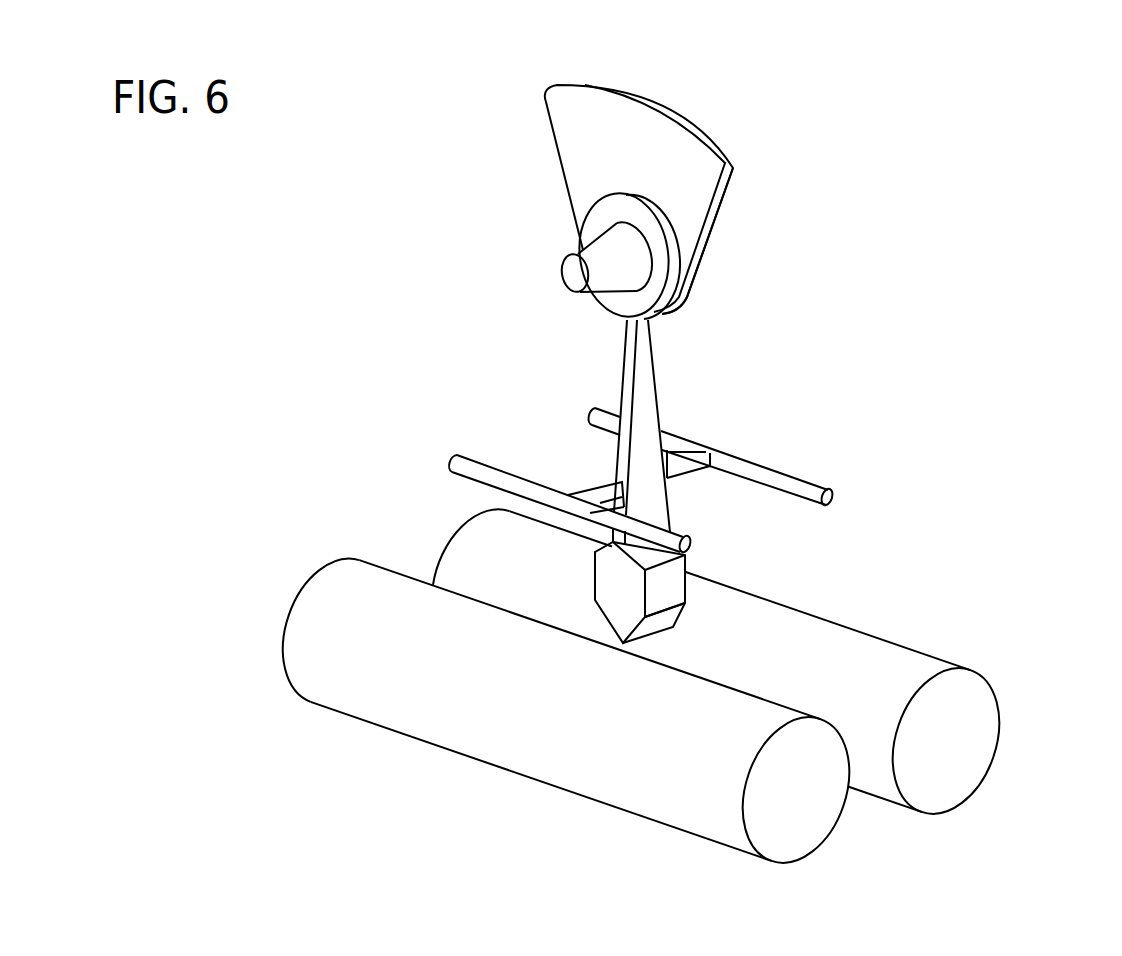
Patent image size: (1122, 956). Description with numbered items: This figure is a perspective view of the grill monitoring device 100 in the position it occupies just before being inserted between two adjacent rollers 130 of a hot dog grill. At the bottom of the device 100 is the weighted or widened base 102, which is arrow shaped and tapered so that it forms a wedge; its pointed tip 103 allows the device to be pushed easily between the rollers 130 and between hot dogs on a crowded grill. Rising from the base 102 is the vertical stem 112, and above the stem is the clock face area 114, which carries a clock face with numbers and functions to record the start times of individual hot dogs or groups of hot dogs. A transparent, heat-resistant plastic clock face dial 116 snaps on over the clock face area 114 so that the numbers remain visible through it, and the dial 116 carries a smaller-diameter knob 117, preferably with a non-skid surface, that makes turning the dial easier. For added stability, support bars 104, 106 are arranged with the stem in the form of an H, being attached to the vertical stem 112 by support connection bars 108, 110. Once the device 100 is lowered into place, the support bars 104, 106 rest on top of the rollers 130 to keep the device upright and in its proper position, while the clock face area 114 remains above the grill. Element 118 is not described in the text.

The monitoring device 100 is at (428, 105).
The base 102 is at (665, 588).
The pointed tip 103 is at (690, 653).
The support bar 104 is at (802, 488).
The support bar 106 is at (473, 472).
The support connection bar 108 is at (690, 465).
The support connection bar 110 is at (603, 494).
The vertical stem 112 is at (645, 390).
The clock face area 114 is at (678, 263).
The clock face dial 116 is at (603, 213).
The knob 117 is at (610, 257).
The sail / fin 118 is at (690, 165).
The rollers 130 is at (760, 833).